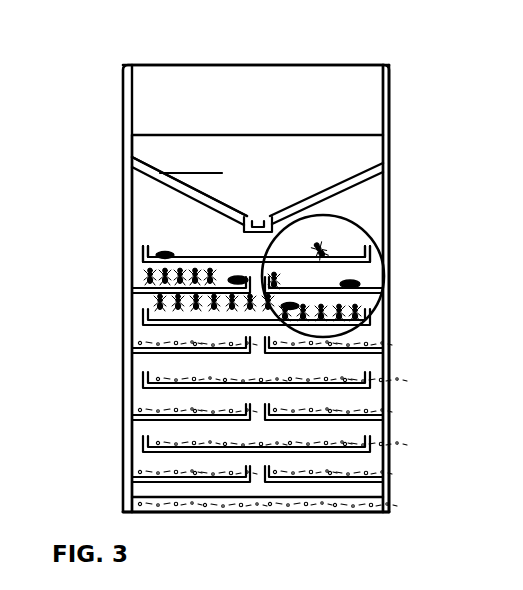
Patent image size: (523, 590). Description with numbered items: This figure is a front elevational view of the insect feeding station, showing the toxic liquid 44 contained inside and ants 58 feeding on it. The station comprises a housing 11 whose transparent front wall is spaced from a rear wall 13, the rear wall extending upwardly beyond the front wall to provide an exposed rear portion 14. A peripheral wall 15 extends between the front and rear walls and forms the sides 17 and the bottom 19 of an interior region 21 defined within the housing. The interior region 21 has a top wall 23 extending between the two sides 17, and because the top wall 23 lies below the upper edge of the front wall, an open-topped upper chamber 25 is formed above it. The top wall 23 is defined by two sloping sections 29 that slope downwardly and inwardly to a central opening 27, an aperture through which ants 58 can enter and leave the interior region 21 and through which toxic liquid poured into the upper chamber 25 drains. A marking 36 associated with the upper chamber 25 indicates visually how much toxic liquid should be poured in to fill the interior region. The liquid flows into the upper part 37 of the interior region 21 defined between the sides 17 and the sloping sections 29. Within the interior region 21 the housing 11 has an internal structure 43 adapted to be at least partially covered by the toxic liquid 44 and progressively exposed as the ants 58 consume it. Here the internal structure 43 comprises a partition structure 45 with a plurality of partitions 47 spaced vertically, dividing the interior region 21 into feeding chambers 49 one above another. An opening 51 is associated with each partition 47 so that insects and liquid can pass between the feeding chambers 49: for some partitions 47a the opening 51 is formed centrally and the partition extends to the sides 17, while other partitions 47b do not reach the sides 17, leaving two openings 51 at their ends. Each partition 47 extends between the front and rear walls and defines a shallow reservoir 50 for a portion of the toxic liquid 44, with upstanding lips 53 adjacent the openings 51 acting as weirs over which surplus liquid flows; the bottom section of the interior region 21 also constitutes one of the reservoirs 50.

The housing 11 is at (335, 135).
The rear wall 13 is at (290, 66).
The exposed rear portion 14 is at (181, 84).
The peripheral wall 15 is at (385, 337).
The sides 17 is at (377, 457).
The bottom 19 is at (363, 513).
The interior region 21 is at (363, 208).
The top wall 23 is at (371, 172).
The upper chamber 25 is at (287, 148).
The central opening 27 is at (243, 224).
The sloping sections 29 is at (358, 167).
The marking 36 is at (180, 176).
The upper part 37 is at (363, 189).
The internal structure 43 is at (142, 258).
The toxic liquid 44 is at (125, 478).
The partition structure 45 is at (135, 335).
The partitions 47 is at (350, 483).
The partitions with central opening 47a is at (357, 357).
The partitions with end openings 47b is at (153, 388).
The feeding chambers 49 is at (378, 240).
The shallow reservoir 50 is at (490, 282).
The opening 51 is at (385, 260).
The upstanding lips 53 is at (386, 442).
The ants 58 is at (392, 272).